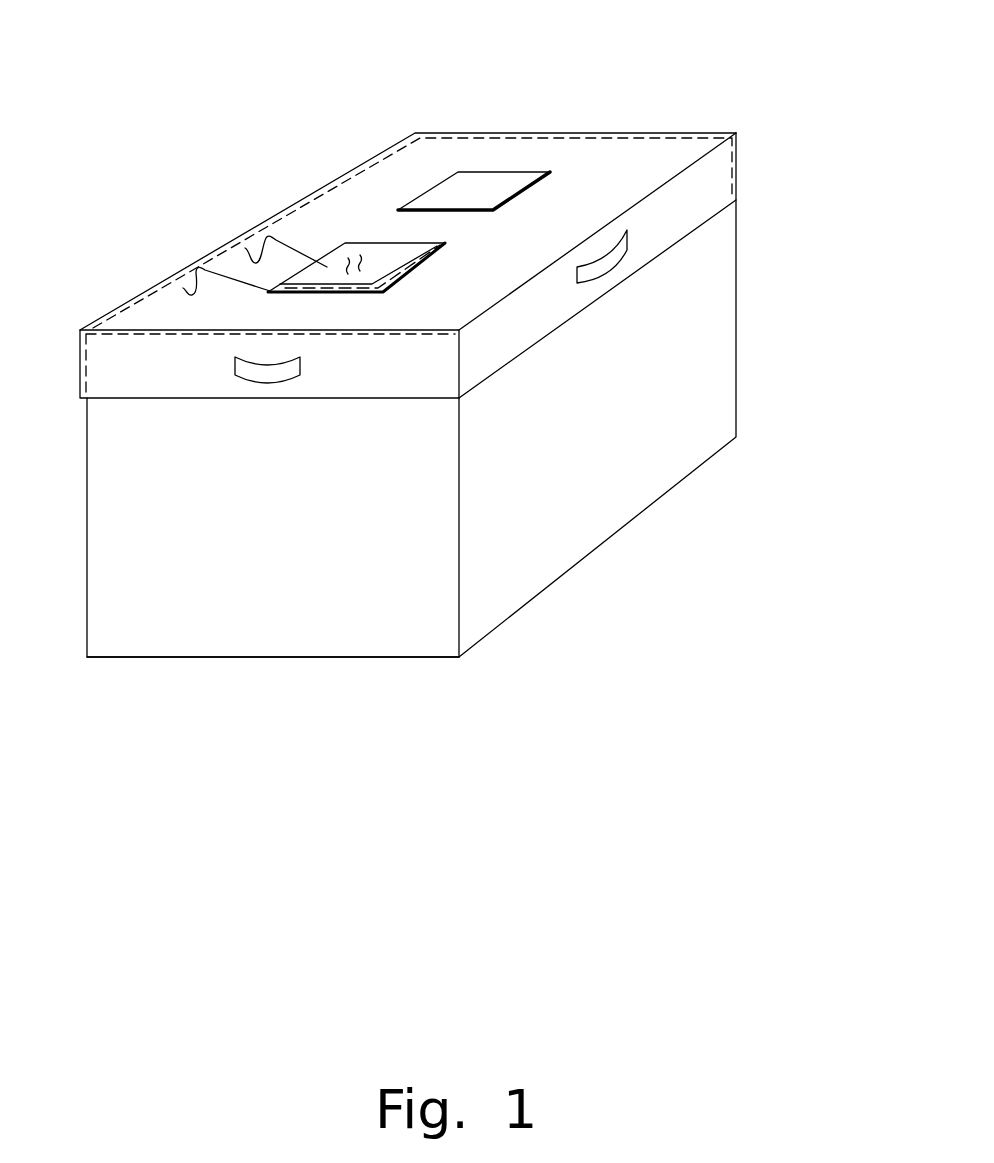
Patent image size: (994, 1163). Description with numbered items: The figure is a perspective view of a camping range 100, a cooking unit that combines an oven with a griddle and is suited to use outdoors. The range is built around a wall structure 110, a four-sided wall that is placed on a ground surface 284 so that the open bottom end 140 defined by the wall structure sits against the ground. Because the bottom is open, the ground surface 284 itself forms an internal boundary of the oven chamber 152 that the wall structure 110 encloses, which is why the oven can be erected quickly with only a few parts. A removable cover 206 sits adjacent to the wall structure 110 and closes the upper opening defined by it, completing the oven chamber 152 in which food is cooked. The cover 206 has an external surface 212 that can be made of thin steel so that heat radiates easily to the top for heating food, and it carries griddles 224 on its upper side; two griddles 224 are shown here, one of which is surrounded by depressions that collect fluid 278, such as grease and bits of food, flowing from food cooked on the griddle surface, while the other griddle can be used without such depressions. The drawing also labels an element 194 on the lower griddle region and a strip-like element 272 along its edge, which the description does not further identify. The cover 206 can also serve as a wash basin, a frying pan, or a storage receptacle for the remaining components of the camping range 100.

The camping range 100 is at (230, 110).
The wall structure 110 is at (750, 323).
The open bottom end 140 is at (287, 669).
The oven chamber 152 is at (297, 537).
The ground surface 284 is at (772, 560).
The cover 206 is at (460, 133).
The external surface 212 is at (688, 142).
The griddle 224 is at (388, 265).
The heating element patch 194 is at (270, 291).
The adhesive strip 272 is at (447, 244).
The fluid 278 is at (183, 288).